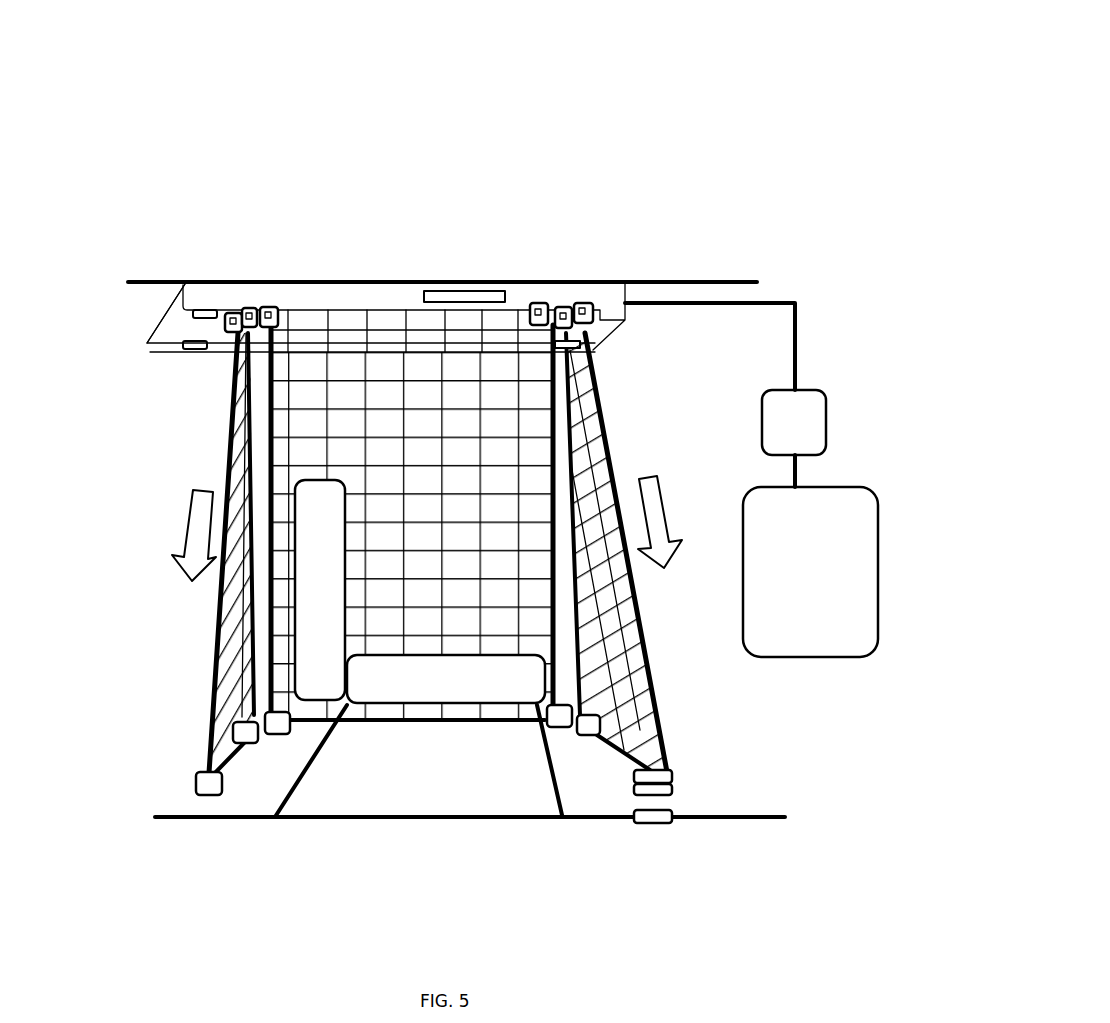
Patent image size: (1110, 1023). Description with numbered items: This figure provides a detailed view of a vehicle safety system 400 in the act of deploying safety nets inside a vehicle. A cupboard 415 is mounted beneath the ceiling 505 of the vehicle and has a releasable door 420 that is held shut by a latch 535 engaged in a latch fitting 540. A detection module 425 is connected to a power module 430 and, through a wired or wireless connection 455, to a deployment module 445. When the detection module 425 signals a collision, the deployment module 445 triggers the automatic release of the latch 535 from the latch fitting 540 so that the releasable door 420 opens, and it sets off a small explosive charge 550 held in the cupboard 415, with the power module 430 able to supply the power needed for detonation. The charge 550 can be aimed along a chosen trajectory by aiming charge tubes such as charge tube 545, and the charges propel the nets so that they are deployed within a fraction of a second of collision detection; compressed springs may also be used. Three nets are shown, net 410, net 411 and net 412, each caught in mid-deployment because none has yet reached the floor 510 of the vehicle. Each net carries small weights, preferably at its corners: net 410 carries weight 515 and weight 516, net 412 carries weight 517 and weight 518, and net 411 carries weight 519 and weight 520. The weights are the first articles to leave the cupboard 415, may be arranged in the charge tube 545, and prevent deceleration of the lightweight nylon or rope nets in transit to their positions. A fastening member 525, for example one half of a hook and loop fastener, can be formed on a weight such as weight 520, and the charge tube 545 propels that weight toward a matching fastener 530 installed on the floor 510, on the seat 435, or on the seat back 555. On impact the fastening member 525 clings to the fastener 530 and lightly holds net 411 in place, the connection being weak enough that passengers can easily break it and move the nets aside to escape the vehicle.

The vehicle safety system 400 is at (694, 118).
The ceiling 505 is at (756, 281).
The cupboard 415 is at (360, 296).
The releasable door 420 is at (166, 325).
The deployment module 445 is at (478, 294).
The latch 535 is at (210, 308).
The latch fitting 540 is at (176, 352).
The charge 550 is at (250, 306).
The charge tube 545 is at (582, 298).
The net 410 is at (207, 683).
The net 411 is at (650, 692).
The seat back 555 is at (292, 581).
The seat 435 is at (453, 694).
The net 412 is at (389, 717).
The floor 510 is at (440, 824).
The weight 515 is at (211, 802).
The weight 516 is at (251, 748).
The weight 517 is at (286, 741).
The weight 518 is at (561, 733).
The weight 519 is at (592, 741).
The weight 520 is at (675, 776).
The fastening member 525 is at (675, 796).
The fastener 530 is at (663, 822).
The connection 455 is at (806, 348).
The power module 430 is at (808, 428).
The detection module 425 is at (794, 529).